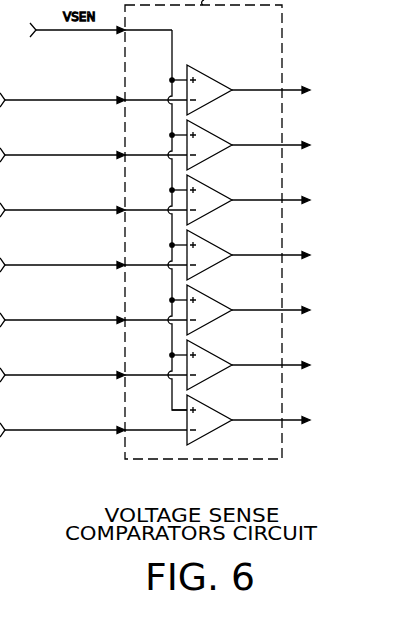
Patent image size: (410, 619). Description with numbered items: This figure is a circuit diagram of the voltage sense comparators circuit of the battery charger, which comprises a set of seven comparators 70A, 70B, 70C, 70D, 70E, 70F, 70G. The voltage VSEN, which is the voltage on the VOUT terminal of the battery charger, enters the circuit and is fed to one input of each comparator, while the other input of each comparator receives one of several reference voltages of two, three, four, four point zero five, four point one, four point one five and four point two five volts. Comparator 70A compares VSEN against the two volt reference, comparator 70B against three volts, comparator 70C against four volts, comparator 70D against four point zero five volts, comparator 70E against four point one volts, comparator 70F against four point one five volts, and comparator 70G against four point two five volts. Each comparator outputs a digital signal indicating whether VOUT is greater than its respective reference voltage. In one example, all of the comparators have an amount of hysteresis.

The comparator 70A is at (206, 75).
The comparator 70B is at (206, 130).
The comparator 70C is at (206, 185).
The comparator 70D is at (206, 240).
The comparator 70E is at (206, 295).
The comparator 70F is at (206, 350).
The comparator 70G is at (206, 405).